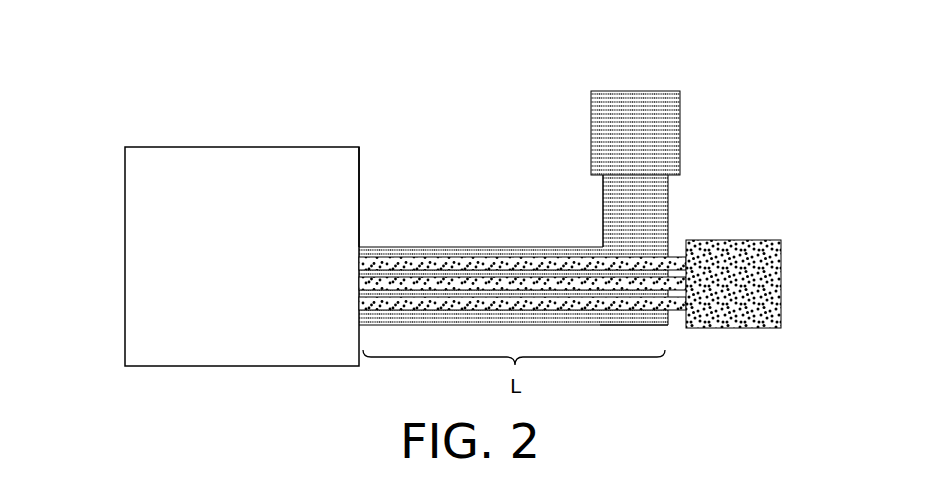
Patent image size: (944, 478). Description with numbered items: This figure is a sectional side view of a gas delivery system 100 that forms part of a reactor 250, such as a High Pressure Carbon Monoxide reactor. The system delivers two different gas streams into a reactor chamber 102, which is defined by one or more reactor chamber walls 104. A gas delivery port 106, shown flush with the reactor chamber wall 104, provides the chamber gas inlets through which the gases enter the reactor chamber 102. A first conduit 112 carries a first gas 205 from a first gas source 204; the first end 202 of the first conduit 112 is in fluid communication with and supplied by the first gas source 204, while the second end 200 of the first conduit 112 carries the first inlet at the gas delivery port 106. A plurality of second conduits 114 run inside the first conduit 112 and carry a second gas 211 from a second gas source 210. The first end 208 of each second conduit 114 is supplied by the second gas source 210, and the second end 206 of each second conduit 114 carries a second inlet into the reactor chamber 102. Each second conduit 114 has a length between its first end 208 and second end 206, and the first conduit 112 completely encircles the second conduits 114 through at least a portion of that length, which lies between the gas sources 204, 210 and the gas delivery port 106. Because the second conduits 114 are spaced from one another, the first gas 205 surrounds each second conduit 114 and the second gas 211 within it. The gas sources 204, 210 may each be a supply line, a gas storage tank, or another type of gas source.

The gas delivery system 100 is at (677, 58).
The reactor 250 is at (130, 121).
The reactor chamber 102 is at (180, 155).
The reactor chamber wall 104 is at (360, 158).
The gas delivery port 106 is at (340, 248).
The first conduit 112 is at (603, 213).
The second conduits 114 is at (428, 302).
The second end of first conduit 200 is at (363, 257).
The first end of first conduit 202 is at (668, 178).
The first gas source 204 is at (620, 90).
The first gas 205 is at (667, 110).
The second end of second conduit 206 is at (363, 303).
The first end of second conduit 208 is at (677, 325).
The second gas source 210 is at (770, 240).
The second gas 211 is at (782, 277).